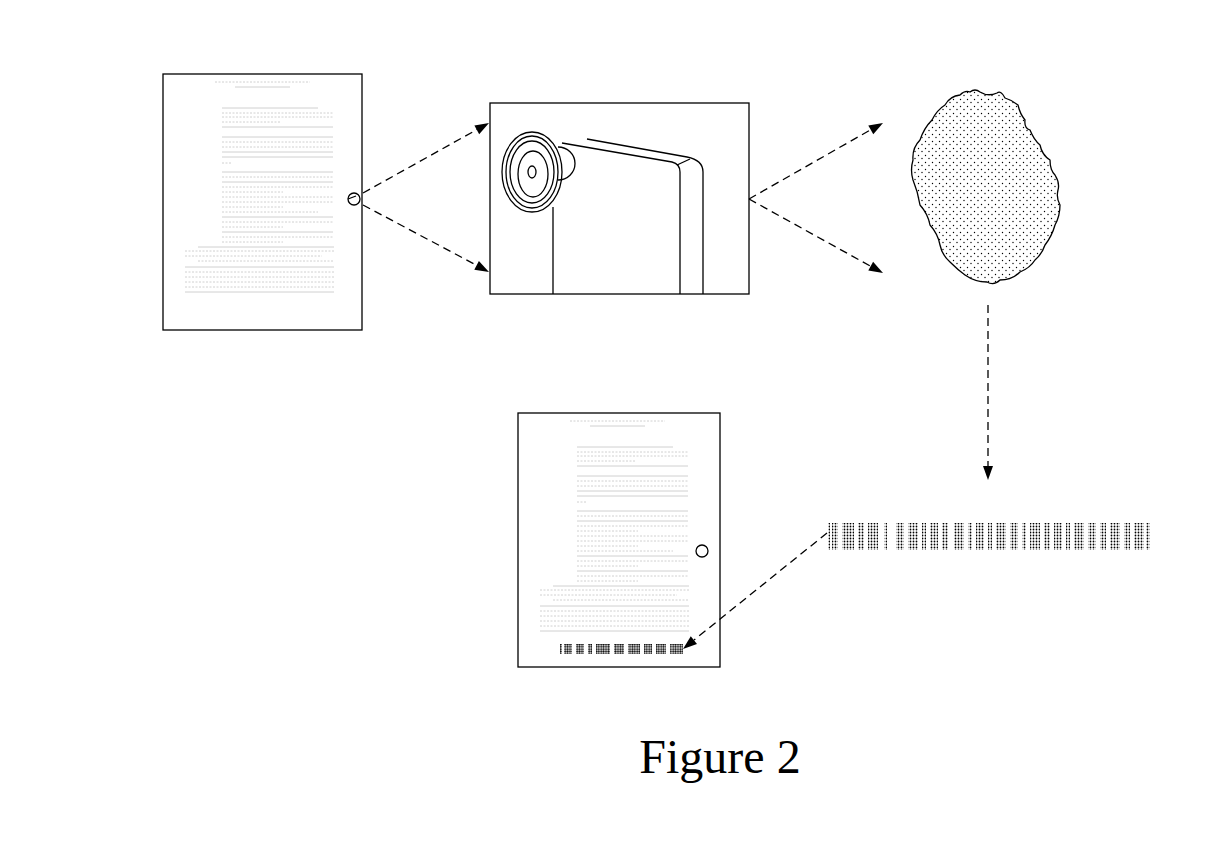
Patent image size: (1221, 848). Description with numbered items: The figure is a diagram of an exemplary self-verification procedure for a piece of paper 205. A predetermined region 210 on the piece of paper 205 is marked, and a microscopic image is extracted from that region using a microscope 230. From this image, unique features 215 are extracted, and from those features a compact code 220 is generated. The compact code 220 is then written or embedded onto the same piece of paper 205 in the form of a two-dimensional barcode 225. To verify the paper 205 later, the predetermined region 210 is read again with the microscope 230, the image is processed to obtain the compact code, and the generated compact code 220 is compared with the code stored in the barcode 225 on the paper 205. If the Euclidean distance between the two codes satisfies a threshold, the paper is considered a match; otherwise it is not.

The piece of paper 205 is at (263, 330).
The predetermined region 210 is at (355, 187).
The unique features 215 is at (1057, 173).
The compact code 220 is at (1152, 536).
The 2D barcode 225 is at (560, 648).
The microscope 230 is at (620, 103).